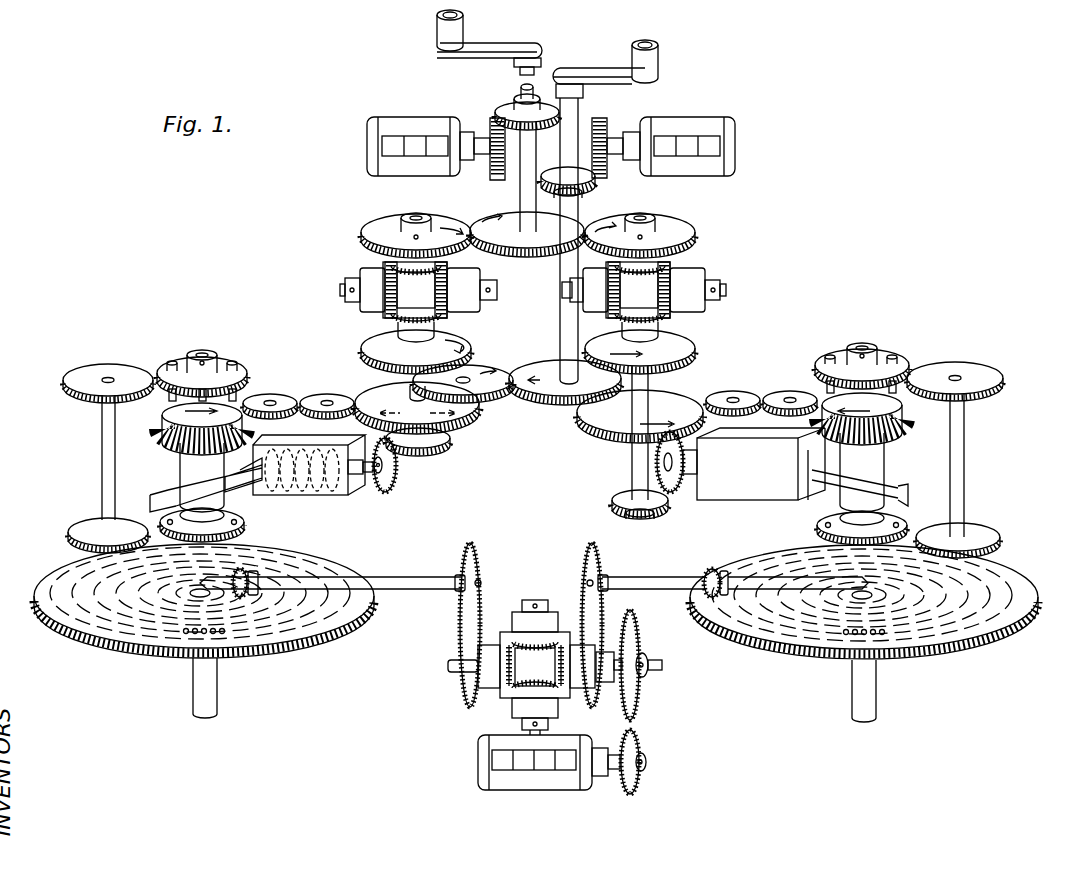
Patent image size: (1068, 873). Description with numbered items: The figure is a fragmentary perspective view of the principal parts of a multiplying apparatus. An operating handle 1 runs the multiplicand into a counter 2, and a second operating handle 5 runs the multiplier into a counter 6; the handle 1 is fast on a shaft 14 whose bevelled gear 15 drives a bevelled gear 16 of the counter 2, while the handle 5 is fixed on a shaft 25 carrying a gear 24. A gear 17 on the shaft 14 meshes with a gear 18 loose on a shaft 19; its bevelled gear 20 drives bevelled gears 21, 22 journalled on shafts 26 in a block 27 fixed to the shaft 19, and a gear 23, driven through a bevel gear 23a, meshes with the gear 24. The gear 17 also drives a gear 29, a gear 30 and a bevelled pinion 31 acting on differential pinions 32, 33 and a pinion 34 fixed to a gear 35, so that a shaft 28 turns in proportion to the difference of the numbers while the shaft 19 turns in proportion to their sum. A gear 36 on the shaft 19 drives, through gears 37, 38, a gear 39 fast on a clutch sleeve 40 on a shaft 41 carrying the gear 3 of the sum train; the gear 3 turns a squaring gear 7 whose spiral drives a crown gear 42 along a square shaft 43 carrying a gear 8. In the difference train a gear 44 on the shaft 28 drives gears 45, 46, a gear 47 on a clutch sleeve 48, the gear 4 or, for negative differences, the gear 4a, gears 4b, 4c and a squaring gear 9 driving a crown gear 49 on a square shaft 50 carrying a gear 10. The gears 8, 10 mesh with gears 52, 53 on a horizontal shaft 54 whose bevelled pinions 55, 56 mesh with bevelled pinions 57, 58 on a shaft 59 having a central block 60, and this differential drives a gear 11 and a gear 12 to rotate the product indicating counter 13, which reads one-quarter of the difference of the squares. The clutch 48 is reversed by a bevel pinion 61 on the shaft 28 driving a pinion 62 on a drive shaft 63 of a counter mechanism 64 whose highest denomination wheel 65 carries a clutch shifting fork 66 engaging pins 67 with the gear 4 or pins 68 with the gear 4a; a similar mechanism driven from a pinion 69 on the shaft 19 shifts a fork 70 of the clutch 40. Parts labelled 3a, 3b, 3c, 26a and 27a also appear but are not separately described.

The operating handle 1 is at (654, 64).
The counter 2 is at (703, 120).
The gear of the sum train 3 is at (820, 527).
The disc 3a is at (880, 359).
The disc 3b is at (988, 370).
The disc 3c is at (985, 526).
The gear of the difference train 4 is at (198, 362).
The gear 4a is at (246, 531).
The gear 4b is at (108, 367).
The gear 4c is at (96, 524).
The second operating handle 5 is at (459, 32).
The counter 6 is at (396, 120).
The squaring gear 7 is at (803, 661).
The gear 8 is at (585, 561).
The squaring gear 9 is at (288, 659).
The gear 10 is at (481, 567).
The gear 11 is at (643, 656).
The gear 12 is at (646, 757).
The product indicating counter 13 is at (486, 745).
The shaft 14 is at (562, 320).
The bevelled gear 15 is at (584, 193).
The bevelled gear 16 is at (602, 120).
The gear 17 is at (556, 398).
The gear 18 is at (690, 351).
The shaft 19 is at (648, 396).
The bevelled gear 20 is at (623, 336).
The bevelled gear 21 is at (608, 312).
The bevelled gear 22 is at (671, 302).
The gear 23 is at (690, 223).
The bevel gear 23a is at (655, 262).
The gear 24 is at (518, 248).
The shaft 25 is at (522, 180).
The shafts 26 is at (561, 293).
The shaft end 26a is at (340, 292).
The block 27 is at (645, 302).
The differential counter 27a is at (421, 302).
The shaft 28 is at (410, 400).
The gear 29 is at (492, 406).
The gear 30 is at (363, 349).
The bevelled pinion 31 is at (406, 330).
The differential pinion 32 is at (385, 276).
The differential pinion 33 is at (447, 300).
The pinion 34 is at (409, 262).
The gear 35 is at (392, 219).
The gear 36 is at (616, 429).
The gear 37 is at (736, 397).
The gear 38 is at (781, 397).
The gear 39 is at (903, 417).
The clutch sleeve 40 is at (885, 470).
The shaft 41 is at (858, 351).
The crown gear 42 is at (718, 569).
The square shaft 43 is at (633, 578).
The gear 44 is at (466, 431).
The gear 45 is at (342, 399).
The gear 46 is at (284, 393).
The gear 47 is at (168, 438).
The clutch sleeve 48 is at (180, 471).
The crown gear 49 is at (248, 600).
The square shaft 50 is at (381, 577).
The gear 52 is at (586, 700).
The gear 53 is at (470, 642).
The horizontal shaft 54 is at (456, 673).
The bevelled pinion 55 is at (567, 652).
The bevelled pinion 56 is at (509, 660).
The bevelled pinion 57 is at (521, 626).
The bevelled pinion 58 is at (526, 695).
The shaft 59 is at (540, 600).
The central block portion 60 is at (535, 665).
The bevel pinion 61 is at (431, 449).
The pinion 62 is at (392, 486).
The drive shaft 63 is at (383, 470).
The counter mechanism 64 is at (336, 508).
The highest denomination wheel 65 is at (283, 482).
The clutch shifting fork 66 is at (243, 492).
The pins 67 is at (237, 392).
The pins 68 is at (172, 520).
The pinion 69 is at (626, 492).
The clutch shifting fork 70 is at (807, 481).